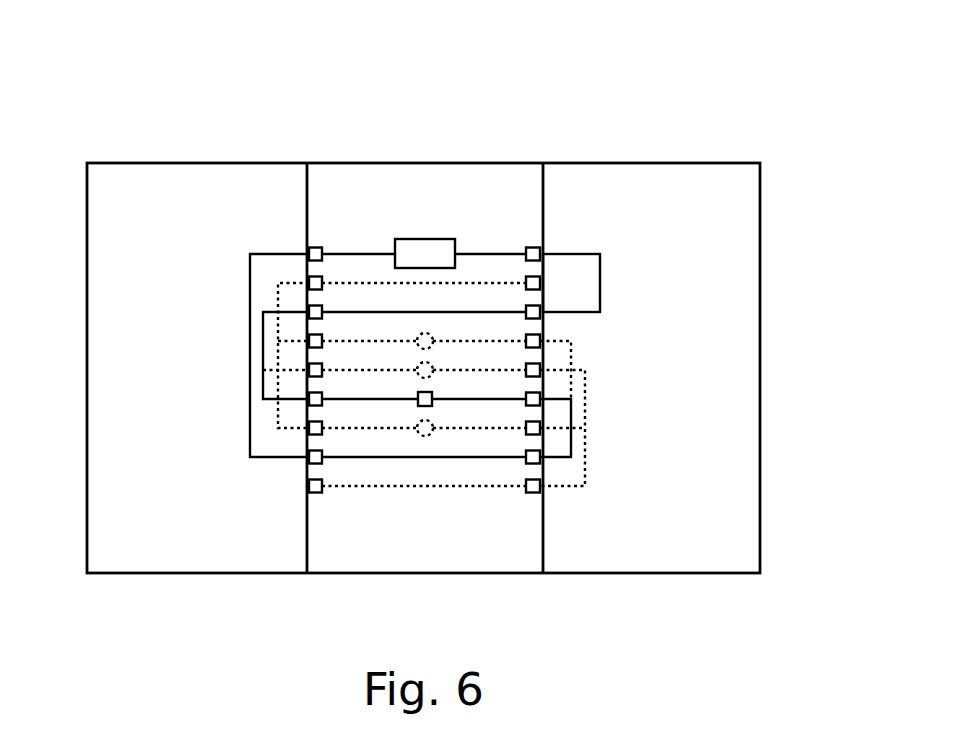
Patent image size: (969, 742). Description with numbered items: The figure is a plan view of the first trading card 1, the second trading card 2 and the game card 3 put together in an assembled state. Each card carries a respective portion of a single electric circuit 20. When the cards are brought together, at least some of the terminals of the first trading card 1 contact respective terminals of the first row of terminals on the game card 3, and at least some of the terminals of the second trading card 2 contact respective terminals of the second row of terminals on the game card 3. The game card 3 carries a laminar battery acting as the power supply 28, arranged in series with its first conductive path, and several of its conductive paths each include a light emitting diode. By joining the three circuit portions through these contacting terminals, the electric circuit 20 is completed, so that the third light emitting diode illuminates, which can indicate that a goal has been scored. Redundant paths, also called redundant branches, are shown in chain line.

The first trading card 1 is at (444, 302).
The second trading card 2 is at (444, 302).
The game card 3 is at (662, 162).
The electric circuit 20 is at (427, 172).
The power supply 28 is at (411, 252).